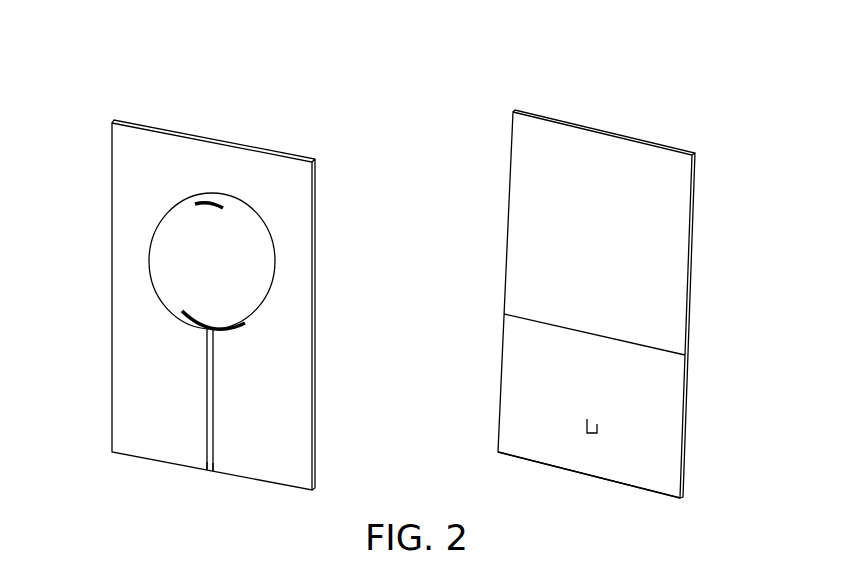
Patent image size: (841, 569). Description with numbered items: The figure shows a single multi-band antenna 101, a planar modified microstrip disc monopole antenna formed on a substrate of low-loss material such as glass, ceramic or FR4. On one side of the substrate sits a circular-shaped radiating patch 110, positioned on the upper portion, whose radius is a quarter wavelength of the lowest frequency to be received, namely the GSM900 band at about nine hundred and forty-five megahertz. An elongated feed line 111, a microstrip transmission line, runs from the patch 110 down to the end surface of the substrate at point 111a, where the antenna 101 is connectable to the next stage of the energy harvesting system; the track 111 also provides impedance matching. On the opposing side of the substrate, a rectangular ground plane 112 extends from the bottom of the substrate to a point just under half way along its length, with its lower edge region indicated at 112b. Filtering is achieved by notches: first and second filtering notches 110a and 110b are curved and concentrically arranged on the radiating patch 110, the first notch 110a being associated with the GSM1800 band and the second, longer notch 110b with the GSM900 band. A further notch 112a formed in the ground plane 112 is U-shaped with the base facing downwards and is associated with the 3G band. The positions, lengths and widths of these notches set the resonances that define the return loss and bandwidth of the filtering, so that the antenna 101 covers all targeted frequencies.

The antenna 101 is at (616, 82).
The circular-shaped radiating patch 110 is at (155, 257).
The first filtering notch 110a is at (210, 209).
The second filtering notch 110b is at (199, 320).
The feed line 111 is at (207, 408).
The feed point 111a is at (208, 472).
The ground plane 112 is at (503, 445).
The ground plane notch 112a is at (586, 426).
The bottom edge of antenna portion 112b is at (595, 482).
The GSM1800 band GSM1800 is at (250, 201).
The GSM900 band GSM900 is at (262, 325).
The 3G band 3G is at (620, 425).